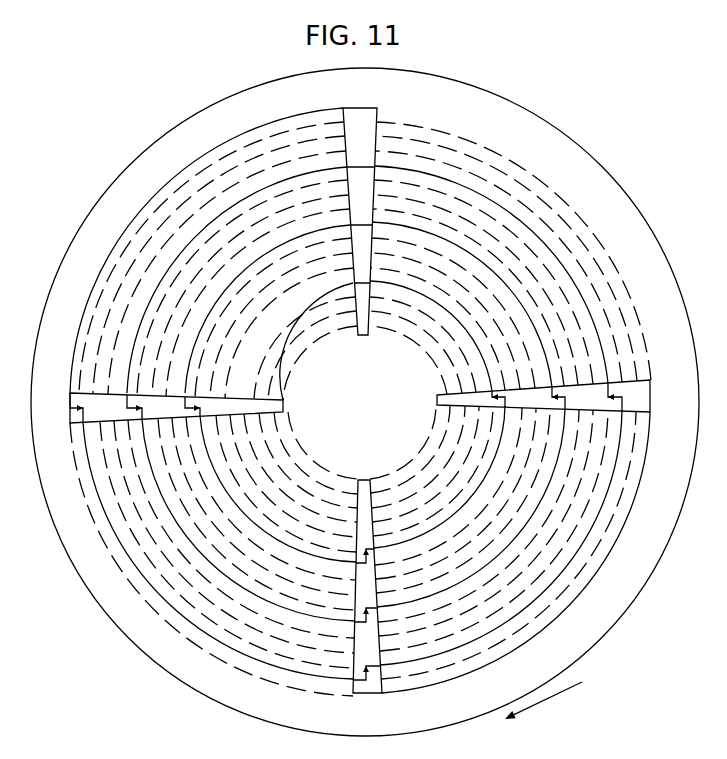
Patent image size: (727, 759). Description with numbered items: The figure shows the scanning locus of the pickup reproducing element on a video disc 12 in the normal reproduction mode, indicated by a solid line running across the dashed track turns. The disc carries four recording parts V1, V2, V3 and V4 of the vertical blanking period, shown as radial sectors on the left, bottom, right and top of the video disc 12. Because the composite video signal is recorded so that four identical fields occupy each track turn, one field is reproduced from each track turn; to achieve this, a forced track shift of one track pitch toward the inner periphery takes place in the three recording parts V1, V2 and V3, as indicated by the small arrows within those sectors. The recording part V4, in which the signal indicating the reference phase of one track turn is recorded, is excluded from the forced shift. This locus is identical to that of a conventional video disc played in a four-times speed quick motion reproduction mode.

The video disc 12 is at (131, 163).
The recording part of the vertical blanking period V1 is at (68, 385).
The recording part of the vertical blanking period V2 is at (385, 699).
The recording part of the vertical blanking period V3 is at (654, 377).
The recording part of the vertical blanking period V4 is at (383, 100).